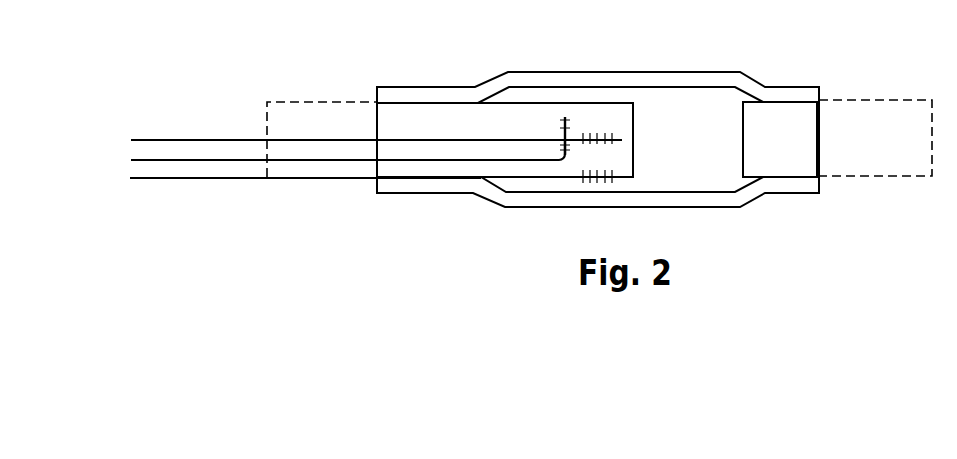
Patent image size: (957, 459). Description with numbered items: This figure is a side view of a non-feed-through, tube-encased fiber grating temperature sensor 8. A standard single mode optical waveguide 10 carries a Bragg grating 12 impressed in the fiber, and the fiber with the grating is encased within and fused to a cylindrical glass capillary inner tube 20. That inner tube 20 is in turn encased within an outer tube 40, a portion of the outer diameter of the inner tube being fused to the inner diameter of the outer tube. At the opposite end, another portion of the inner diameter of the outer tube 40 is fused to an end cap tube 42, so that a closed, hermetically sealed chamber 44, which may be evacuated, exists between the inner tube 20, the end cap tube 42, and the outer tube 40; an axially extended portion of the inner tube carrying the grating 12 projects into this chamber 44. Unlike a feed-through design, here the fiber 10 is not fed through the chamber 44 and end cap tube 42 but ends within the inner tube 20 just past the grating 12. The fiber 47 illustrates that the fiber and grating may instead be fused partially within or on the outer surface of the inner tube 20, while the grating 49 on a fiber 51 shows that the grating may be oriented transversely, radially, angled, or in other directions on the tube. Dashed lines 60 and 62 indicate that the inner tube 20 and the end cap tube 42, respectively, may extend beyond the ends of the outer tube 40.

The pressure-isolated Bragg grating temperature sensor 8 is at (311, 64).
The optical waveguide 10 is at (253, 140).
The Bragg grating 12 is at (582, 137).
The inner tube 20 is at (490, 132).
The outer tube 40 is at (683, 74).
The end cap tube 42 is at (788, 113).
The chamber 44 is at (707, 178).
The fiber 47 is at (236, 179).
The grating 49 is at (575, 117).
The fiber 51 is at (215, 160).
The dashed lines 60 is at (355, 102).
The dashed lines 62 is at (880, 110).